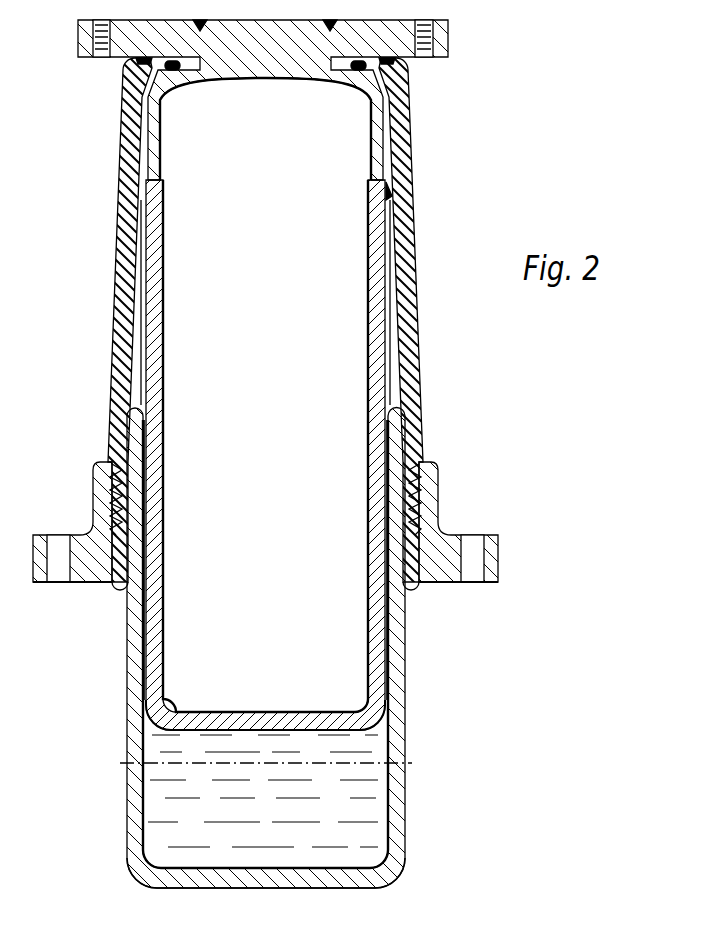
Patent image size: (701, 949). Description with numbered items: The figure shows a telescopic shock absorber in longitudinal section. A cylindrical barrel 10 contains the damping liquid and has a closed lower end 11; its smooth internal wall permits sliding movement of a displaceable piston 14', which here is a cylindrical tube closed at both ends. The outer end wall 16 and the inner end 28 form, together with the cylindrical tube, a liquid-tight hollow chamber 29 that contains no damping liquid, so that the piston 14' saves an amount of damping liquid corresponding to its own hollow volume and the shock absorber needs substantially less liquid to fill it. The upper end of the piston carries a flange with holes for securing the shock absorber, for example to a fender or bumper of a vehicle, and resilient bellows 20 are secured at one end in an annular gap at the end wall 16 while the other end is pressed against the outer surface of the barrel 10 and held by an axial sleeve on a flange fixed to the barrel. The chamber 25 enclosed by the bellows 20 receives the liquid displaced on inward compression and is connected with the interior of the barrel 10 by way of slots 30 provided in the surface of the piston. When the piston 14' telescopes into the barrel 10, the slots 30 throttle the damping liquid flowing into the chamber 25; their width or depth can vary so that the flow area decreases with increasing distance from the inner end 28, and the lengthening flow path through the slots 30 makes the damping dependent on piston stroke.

The cylindrical barrel 10 is at (393, 810).
The closed lower end 11 is at (317, 877).
The displaceable piston 14' is at (317, 293).
The end wall 16 is at (380, 89).
The resilient bellows 20 is at (393, 160).
The chamber 25 is at (390, 333).
The inner end 28 is at (295, 718).
The liquid-tight hollow chamber 29 is at (277, 492).
The slots 30 is at (140, 627).